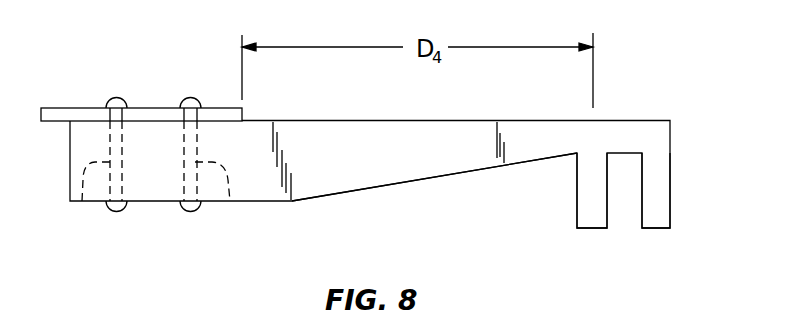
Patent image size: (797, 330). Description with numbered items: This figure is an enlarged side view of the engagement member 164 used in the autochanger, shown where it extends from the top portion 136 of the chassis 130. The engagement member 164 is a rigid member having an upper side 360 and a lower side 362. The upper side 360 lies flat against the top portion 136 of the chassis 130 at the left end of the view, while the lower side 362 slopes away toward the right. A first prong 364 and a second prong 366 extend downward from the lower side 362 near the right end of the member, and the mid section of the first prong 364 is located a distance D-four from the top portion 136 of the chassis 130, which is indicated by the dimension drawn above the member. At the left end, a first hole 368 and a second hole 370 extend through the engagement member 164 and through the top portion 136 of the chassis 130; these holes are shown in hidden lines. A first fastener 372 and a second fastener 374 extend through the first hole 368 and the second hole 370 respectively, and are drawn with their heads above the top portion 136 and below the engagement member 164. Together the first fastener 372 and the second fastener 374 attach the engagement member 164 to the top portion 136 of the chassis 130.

The chassis 130 is at (61, 108).
The top portion 136 is at (141, 114).
The engagement member 164 is at (663, 60).
The upper side 360 is at (357, 120).
The lower side 362 is at (360, 190).
The first prong 364 is at (590, 229).
The second prong 366 is at (655, 229).
The first hole 368 is at (82, 201).
The second hole 370 is at (230, 201).
The first fastener 372 is at (117, 212).
The second fastener 374 is at (191, 212).